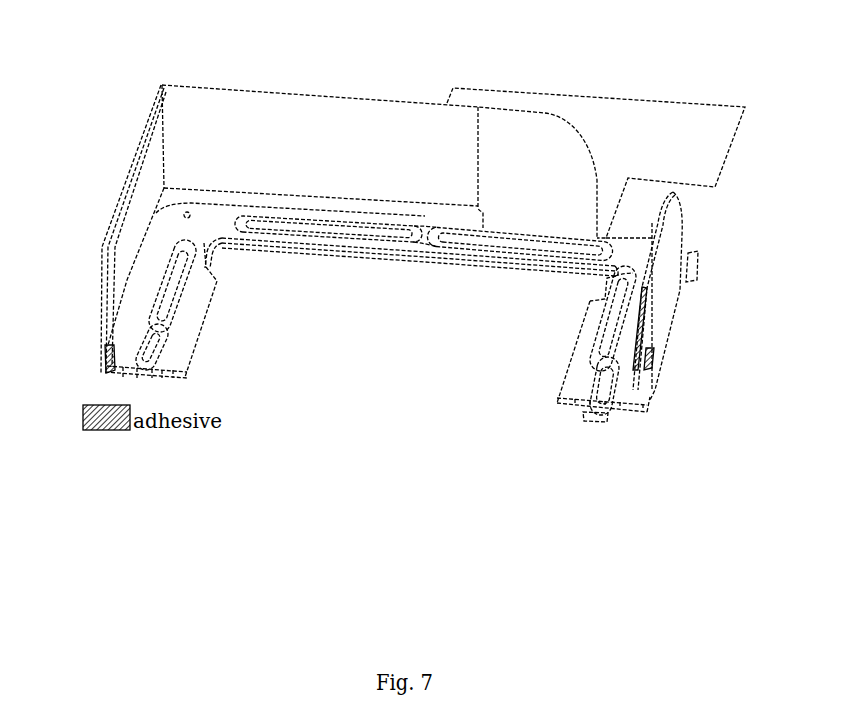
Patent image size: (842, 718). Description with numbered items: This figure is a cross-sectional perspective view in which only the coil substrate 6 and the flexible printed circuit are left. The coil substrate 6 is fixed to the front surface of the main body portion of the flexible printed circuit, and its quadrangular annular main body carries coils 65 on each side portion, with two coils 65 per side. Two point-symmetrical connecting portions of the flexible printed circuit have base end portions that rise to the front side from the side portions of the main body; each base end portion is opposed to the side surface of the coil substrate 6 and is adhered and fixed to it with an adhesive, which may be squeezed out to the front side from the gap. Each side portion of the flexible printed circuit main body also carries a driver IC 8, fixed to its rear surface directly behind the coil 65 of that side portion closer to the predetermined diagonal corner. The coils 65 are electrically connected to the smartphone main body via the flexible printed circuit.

The coil substrate 6 is at (588, 323).
The driver IC 8 is at (303, 260).
The coil 65 is at (165, 353).